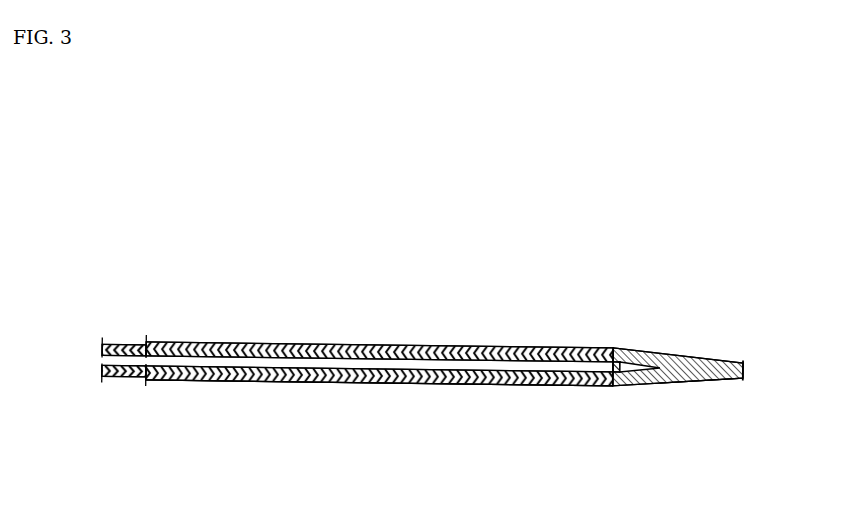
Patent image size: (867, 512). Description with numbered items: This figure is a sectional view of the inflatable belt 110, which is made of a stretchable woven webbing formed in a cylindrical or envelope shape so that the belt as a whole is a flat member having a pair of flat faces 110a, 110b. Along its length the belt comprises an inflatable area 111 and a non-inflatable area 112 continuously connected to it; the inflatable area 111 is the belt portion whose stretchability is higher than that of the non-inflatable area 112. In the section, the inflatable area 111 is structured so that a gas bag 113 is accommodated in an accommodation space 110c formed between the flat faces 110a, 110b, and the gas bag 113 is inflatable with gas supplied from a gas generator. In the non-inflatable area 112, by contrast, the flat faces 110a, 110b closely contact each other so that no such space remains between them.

The inflatable belt 110 is at (445, 340).
The flat face 110a is at (250, 343).
The flat face 110b is at (265, 381).
The accommodation space 110c is at (631, 349).
The inflatable area 111 is at (427, 385).
The non-inflatable area 112 is at (678, 385).
The gas bag 113 is at (127, 377).